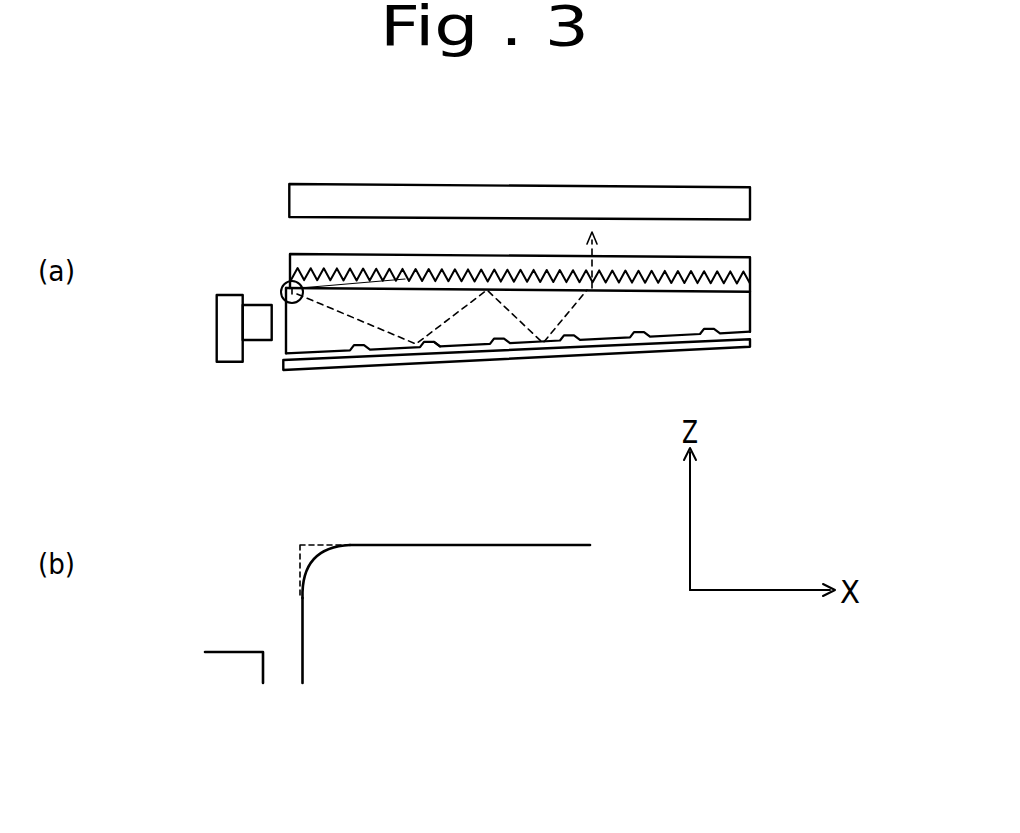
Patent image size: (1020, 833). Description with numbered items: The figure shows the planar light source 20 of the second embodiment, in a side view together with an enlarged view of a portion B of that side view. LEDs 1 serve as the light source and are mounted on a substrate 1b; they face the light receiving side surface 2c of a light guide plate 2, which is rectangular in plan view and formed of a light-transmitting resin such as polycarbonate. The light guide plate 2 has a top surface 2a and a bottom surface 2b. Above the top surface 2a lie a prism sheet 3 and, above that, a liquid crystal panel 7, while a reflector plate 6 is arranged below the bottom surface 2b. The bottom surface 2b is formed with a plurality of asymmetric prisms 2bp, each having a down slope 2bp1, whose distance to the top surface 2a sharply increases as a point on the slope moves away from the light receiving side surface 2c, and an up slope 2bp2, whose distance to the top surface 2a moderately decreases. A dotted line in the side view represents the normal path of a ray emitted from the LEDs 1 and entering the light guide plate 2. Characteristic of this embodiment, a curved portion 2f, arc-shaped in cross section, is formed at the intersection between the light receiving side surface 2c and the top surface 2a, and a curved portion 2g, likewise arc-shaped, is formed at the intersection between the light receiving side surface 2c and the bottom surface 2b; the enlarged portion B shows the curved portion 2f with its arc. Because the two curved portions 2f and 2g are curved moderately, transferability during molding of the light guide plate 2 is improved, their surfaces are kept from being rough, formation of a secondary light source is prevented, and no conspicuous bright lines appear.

The LEDs 1 is at (209, 466).
The substrate 1b is at (216, 342).
The light guide plate 2 is at (499, 430).
The top surface 2a is at (739, 292).
The bottom surface 2b is at (518, 395).
The asymmetric prisms 2bp is at (518, 395).
The down slope 2bp1 is at (455, 350).
The up slope 2bp2 is at (448, 352).
The light receiving side surface 2c is at (283, 330).
The curved portion 2f is at (286, 278).
The curved portion 2g is at (286, 355).
The prism sheet 3 is at (751, 266).
The reflector plate 6 is at (730, 347).
The liquid crystal panel 7 is at (705, 185).
The planar light source 20 is at (284, 243).
The portion B is at (277, 283).